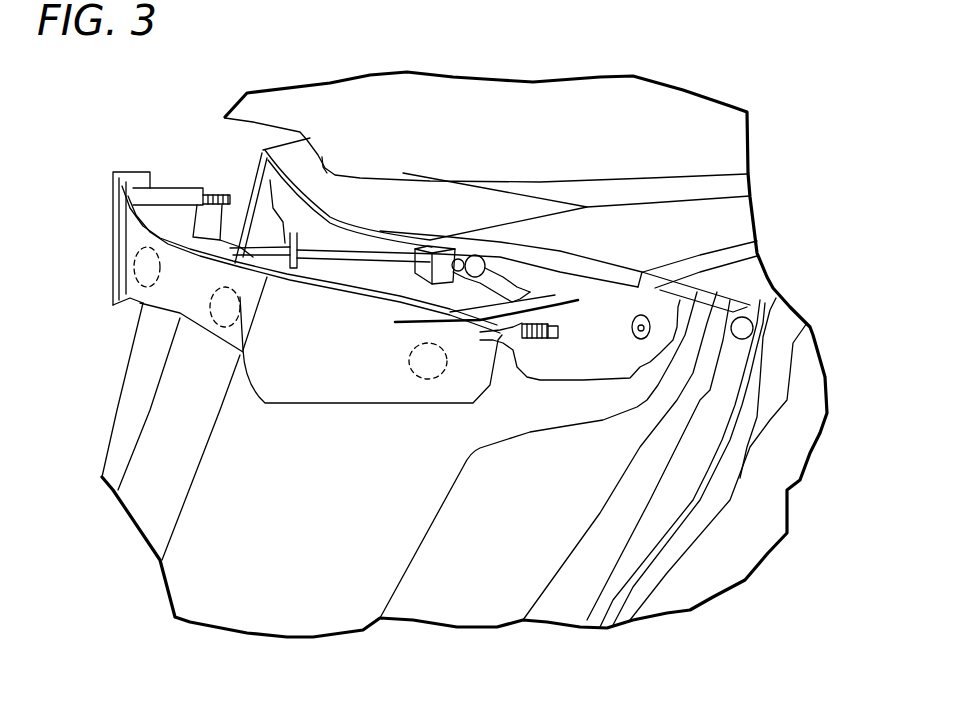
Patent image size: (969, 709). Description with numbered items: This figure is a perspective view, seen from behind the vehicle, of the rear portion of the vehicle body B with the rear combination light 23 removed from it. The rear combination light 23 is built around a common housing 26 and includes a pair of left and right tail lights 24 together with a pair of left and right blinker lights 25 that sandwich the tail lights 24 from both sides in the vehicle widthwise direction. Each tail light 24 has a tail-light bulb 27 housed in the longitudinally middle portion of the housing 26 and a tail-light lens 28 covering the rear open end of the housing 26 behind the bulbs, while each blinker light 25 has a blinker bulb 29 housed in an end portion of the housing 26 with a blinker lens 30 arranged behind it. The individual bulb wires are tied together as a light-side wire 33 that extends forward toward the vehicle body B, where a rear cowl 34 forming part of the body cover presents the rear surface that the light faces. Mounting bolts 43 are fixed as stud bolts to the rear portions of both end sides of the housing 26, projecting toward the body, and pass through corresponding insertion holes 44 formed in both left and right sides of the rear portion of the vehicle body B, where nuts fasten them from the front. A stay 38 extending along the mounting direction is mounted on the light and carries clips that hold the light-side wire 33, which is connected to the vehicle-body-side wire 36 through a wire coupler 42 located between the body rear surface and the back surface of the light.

The vehicle body B is at (524, 199).
The rear combination light 23 is at (277, 405).
The tail light 24 is at (163, 235).
The blinker light 25 is at (110, 198).
The housing 26 is at (370, 290).
The tail-light bulb 27 is at (145, 287).
The tail-light lens 28 is at (180, 313).
The blinker bulb 29 is at (425, 380).
The blinker lens 30 is at (110, 236).
The light-side wire 33 is at (355, 261).
The rear cowl 34 is at (323, 165).
The vehicle-body-side wire 36 is at (571, 340).
The stay 38 is at (245, 263).
The wire coupler 42 is at (410, 268).
The mounting bolt 43 is at (218, 197).
The insertion hole 44 is at (637, 316).